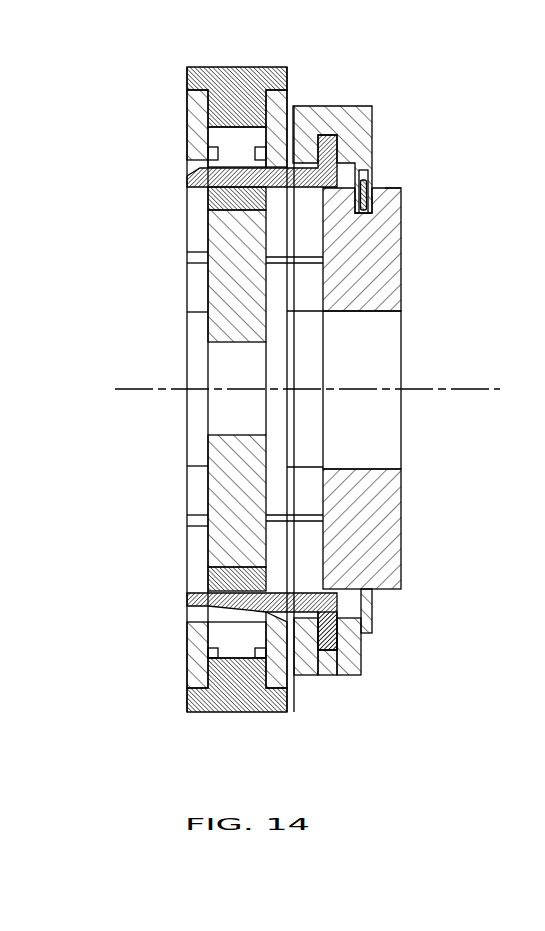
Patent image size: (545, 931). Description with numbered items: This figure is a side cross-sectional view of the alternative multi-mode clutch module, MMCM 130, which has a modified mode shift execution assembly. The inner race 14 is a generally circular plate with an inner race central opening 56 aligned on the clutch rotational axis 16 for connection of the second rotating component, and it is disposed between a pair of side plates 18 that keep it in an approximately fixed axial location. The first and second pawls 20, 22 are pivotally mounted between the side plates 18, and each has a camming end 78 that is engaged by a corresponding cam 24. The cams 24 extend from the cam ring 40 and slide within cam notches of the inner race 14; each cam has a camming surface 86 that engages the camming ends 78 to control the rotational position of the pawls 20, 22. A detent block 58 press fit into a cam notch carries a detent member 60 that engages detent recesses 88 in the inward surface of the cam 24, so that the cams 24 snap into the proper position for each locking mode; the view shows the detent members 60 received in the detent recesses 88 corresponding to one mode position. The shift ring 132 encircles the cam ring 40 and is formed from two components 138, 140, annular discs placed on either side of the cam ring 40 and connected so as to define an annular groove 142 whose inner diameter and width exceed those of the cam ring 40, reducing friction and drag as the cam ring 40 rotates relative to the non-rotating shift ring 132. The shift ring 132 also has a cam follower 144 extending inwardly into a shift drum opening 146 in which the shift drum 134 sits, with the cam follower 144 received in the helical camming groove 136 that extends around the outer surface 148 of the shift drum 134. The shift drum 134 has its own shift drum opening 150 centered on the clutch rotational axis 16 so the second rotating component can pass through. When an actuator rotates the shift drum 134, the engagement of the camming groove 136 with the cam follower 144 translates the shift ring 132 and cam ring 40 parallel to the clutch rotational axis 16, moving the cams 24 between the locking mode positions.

The MMCM 130 is at (114, 82).
The clutch rotational axis 16 is at (461, 388).
The inner race 14 is at (235, 408).
The camming end 78 is at (192, 389).
The second pawls 22 is at (190, 132).
The first pawls 20 is at (243, 657).
The side plates 18 is at (202, 108).
The camming surface 86 is at (214, 165).
The detent recesses 88 is at (243, 183).
The cam ring 40 is at (333, 638).
The detent member 60 is at (208, 204).
The detent block 58 is at (208, 217).
The cams 24 is at (284, 170).
The inner race central opening 56 is at (240, 316).
The shift ring 132 is at (371, 106).
The cam follower 144 is at (366, 180).
The helical camming groove 136 is at (368, 187).
The shift drum 134 is at (401, 299).
The outer surface 148 is at (403, 189).
The shift drum opening 150 is at (362, 469).
The shift drum opening 146 is at (352, 613).
The shift ring component 138 is at (306, 678).
The annular groove 142 is at (330, 653).
The shift ring component 140 is at (361, 673).